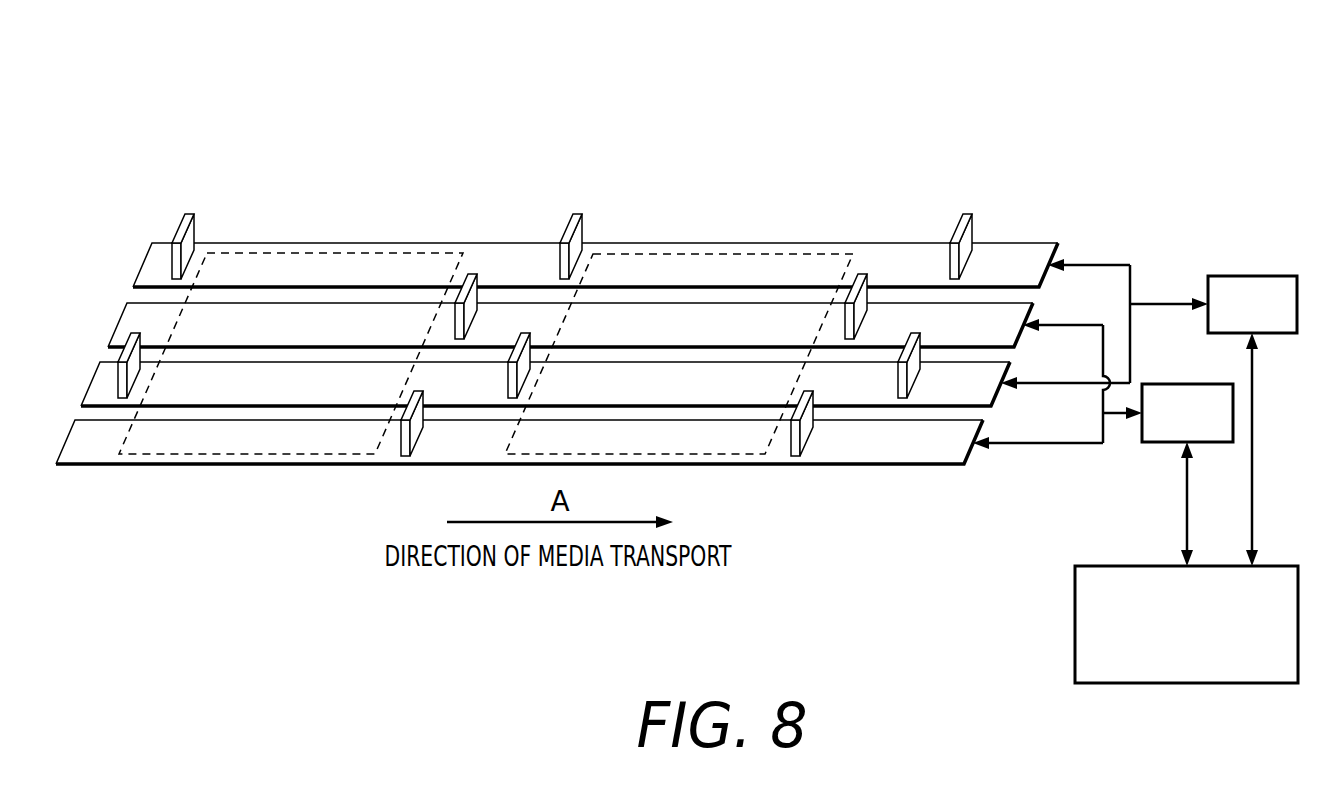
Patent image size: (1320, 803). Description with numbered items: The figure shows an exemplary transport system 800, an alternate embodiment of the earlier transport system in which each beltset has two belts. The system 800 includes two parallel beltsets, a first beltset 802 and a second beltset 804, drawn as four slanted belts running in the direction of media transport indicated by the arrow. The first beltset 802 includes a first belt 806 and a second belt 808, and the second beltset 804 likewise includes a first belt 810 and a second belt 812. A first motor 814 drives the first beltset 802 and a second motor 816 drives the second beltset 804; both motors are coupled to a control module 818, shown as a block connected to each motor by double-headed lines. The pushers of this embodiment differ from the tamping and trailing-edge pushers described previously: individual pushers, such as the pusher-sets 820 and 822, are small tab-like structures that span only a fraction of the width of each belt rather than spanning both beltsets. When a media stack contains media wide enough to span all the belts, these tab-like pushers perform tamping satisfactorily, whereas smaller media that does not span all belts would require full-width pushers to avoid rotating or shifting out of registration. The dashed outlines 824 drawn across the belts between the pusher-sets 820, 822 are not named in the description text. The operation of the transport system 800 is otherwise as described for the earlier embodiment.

The transport system 800 is at (650, 102).
The first beltset 802 is at (1129, 203).
The second beltset 804 is at (1012, 490).
The first belt 806 is at (327, 277).
The second belt 808 is at (297, 389).
The first belt 810 is at (253, 317).
The second belt 812 is at (212, 433).
The first motor 814 is at (1257, 276).
The second motor 816 is at (1162, 442).
The control module 818 is at (1128, 566).
The pusher-set 820 is at (514, 348).
The pusher-set 822 is at (800, 405).
The media sheet 824 is at (408, 253).